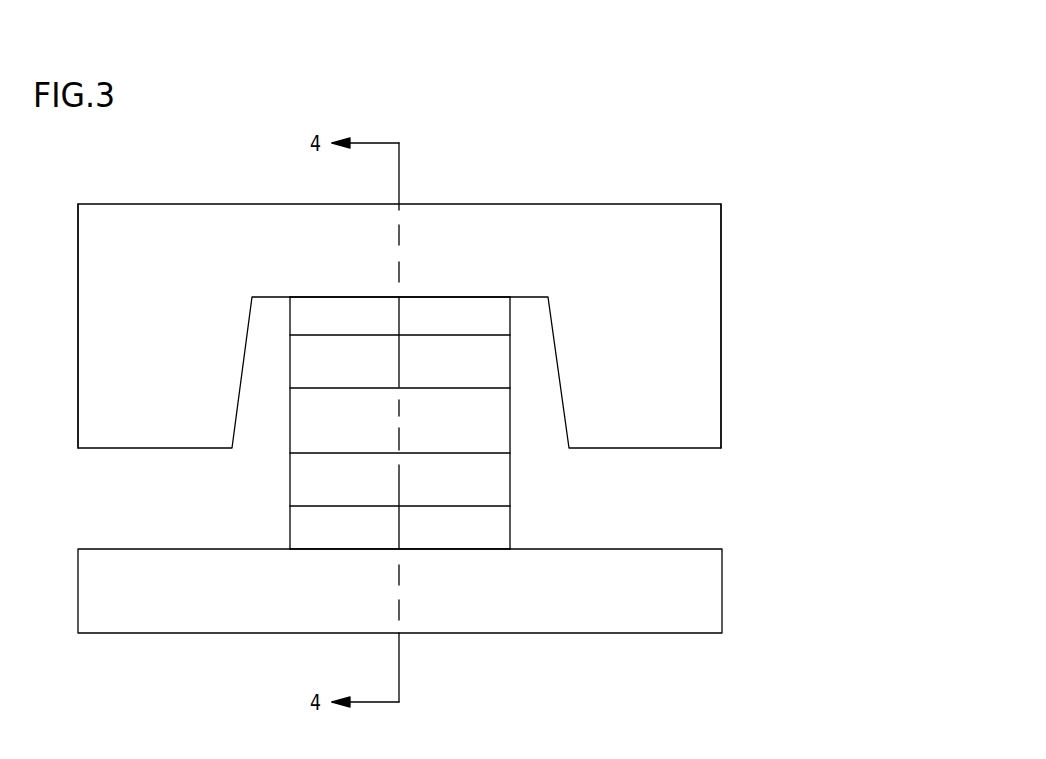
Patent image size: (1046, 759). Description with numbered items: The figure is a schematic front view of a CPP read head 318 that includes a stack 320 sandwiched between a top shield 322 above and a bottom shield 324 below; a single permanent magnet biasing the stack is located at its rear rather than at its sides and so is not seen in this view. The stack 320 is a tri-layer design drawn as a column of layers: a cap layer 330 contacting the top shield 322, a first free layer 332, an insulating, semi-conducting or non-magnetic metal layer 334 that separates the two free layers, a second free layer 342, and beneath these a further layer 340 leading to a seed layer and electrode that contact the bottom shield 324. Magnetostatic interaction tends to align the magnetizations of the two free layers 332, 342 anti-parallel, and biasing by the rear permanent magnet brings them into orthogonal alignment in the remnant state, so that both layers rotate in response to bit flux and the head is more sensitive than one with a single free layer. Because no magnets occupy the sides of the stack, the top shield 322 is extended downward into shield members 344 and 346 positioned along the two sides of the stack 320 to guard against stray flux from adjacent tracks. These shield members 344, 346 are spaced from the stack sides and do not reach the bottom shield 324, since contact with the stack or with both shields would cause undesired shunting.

The read head 318 is at (672, 157).
The stack 320 is at (528, 519).
The top shield 322 is at (716, 258).
The bottom shield 324 is at (647, 624).
The cap layer 330 is at (472, 305).
The first free layer 332 is at (502, 367).
The insulating layer, semi-conducting layer or non-magnetic metal layer 334 is at (502, 428).
The bottom layer 340 is at (300, 522).
The second free layer 342 is at (297, 477).
The shield member 344 is at (92, 385).
The shield member 346 is at (708, 422).